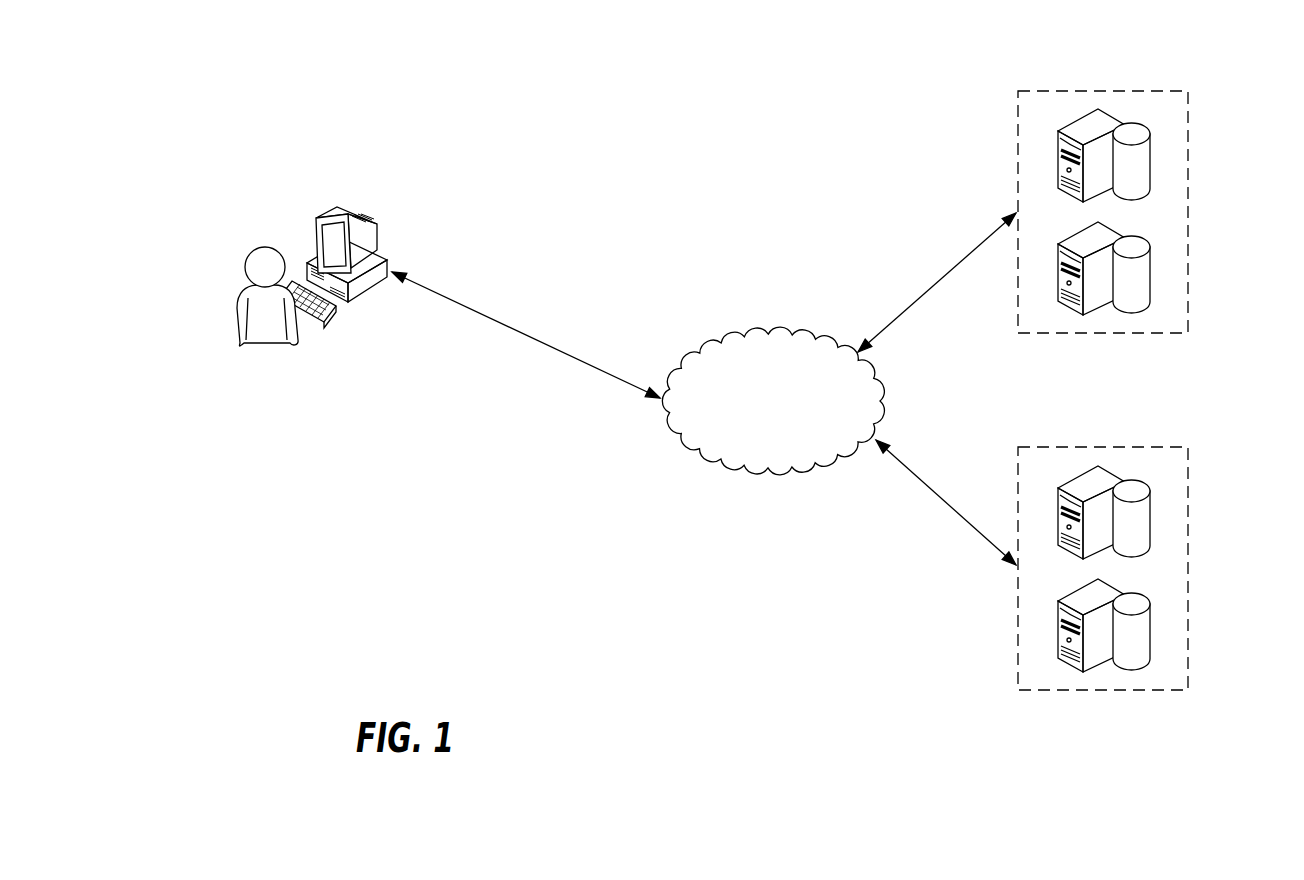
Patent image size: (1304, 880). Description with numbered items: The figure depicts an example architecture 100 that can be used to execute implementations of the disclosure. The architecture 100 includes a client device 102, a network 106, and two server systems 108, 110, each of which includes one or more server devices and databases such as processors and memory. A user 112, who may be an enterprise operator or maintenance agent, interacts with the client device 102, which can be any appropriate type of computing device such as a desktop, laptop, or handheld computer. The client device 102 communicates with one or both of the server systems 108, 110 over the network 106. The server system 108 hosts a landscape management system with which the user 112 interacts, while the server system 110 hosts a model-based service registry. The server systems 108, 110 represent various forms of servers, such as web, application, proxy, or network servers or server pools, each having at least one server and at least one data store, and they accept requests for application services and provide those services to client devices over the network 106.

The example architecture 100 is at (625, 91).
The client device 102 is at (315, 220).
The network 106 is at (777, 332).
The server system 108 is at (1188, 213).
The server system 110 is at (1188, 568).
The user 112 is at (266, 344).